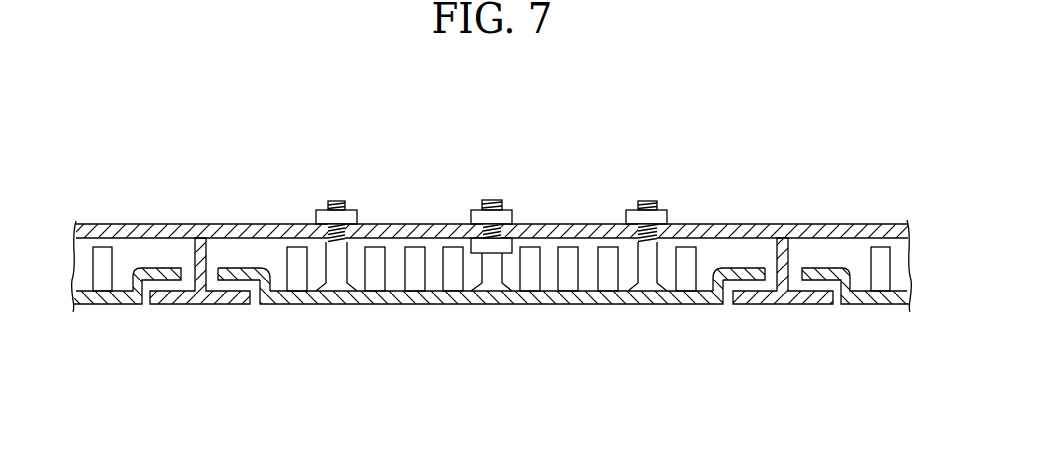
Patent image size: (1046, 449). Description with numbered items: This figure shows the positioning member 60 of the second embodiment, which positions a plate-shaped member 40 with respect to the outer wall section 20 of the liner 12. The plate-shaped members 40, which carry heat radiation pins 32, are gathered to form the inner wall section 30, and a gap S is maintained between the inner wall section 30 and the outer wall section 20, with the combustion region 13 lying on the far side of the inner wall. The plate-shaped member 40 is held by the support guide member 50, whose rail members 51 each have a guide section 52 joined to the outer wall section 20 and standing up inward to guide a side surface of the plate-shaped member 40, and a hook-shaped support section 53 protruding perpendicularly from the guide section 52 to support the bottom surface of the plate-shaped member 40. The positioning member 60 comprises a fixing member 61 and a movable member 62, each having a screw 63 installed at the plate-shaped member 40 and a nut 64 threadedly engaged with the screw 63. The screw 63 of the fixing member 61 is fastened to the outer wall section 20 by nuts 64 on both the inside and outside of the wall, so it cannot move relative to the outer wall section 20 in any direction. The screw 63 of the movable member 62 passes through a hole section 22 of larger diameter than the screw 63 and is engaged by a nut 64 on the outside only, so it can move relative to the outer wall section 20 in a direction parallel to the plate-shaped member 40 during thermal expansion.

The liner 12 is at (260, 223).
The combustion region 13 is at (413, 395).
The outer wall section 20 is at (492, 196).
The hole section 22 is at (343, 232).
The inner wall section 30 is at (491, 270).
The pins 32 is at (608, 242).
The plate-shaped member 40 is at (99, 304).
The support guide member 50 is at (491, 344).
The rail member 51 is at (178, 304).
The guide section 52 is at (211, 258).
The support section 53 is at (253, 297).
The positioning member 60 is at (467, 171).
The fixing member 61 is at (498, 200).
The movable member 62 is at (336, 200).
The screw 63 is at (349, 266).
The nut 64 is at (316, 216).
The gap S is at (397, 253).